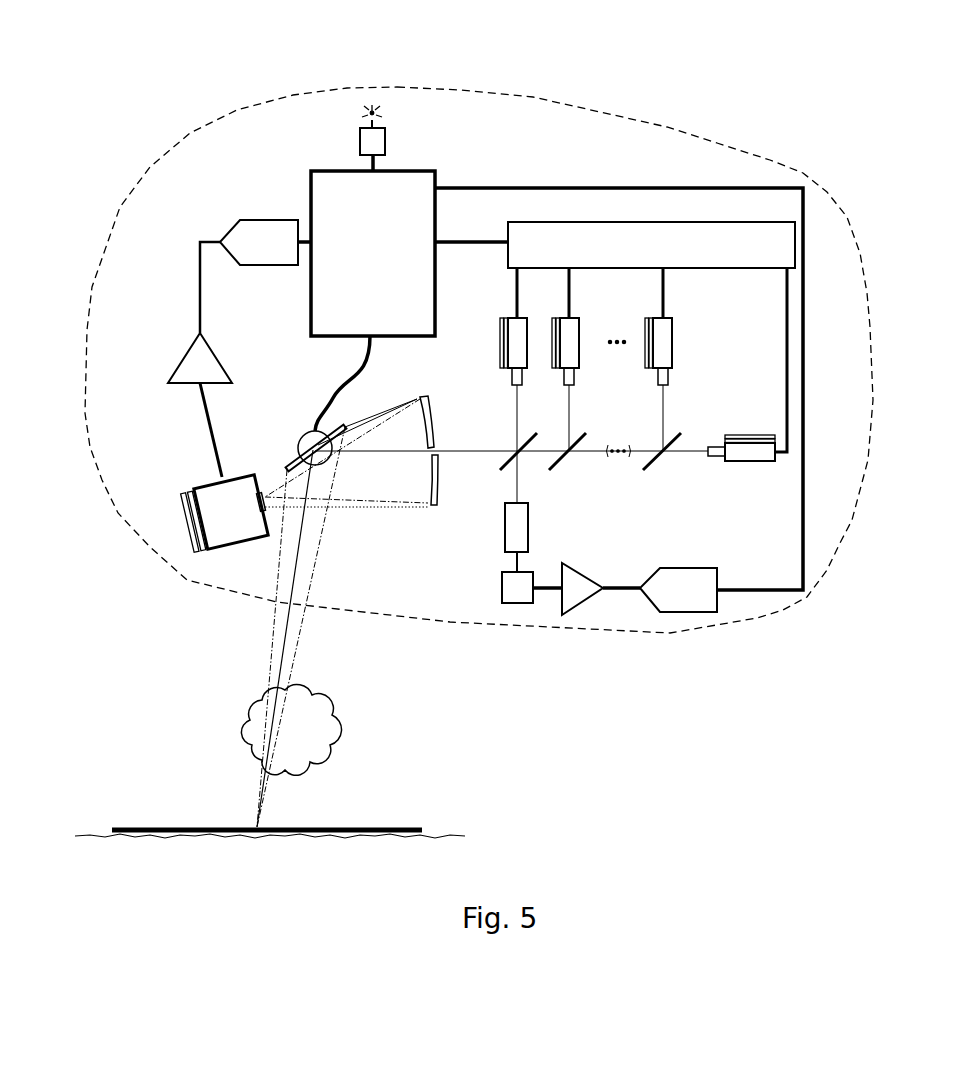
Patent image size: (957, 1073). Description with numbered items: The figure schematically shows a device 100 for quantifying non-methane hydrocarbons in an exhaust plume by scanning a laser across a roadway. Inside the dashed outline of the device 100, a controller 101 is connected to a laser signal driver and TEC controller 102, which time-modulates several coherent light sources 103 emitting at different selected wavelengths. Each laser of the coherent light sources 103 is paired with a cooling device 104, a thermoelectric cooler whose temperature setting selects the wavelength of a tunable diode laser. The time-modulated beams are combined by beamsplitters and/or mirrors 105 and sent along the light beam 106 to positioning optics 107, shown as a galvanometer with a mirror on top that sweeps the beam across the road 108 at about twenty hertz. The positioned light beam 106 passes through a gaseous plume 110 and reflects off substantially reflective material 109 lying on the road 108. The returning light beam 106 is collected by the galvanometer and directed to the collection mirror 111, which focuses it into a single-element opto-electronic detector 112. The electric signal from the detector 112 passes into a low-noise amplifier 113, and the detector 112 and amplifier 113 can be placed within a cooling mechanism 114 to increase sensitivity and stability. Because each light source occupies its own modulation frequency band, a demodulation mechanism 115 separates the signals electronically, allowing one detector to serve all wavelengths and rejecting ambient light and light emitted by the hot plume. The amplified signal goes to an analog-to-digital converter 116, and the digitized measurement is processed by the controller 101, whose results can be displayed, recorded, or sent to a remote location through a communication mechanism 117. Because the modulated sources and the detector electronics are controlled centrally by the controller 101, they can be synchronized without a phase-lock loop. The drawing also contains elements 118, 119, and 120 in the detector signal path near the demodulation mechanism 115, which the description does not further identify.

The device 100 is at (458, 88).
The controller 101 is at (435, 278).
The laser signal driver and TEC controller 102 is at (723, 220).
The coherent light sources 103 is at (527, 343).
The cooling device 104 is at (503, 342).
The beamsplitters and/or mirrors 105 is at (503, 472).
The light beam 106 is at (403, 453).
The positioning optics 107 is at (300, 442).
The road 108 is at (440, 835).
The substantially reflective material 109 is at (331, 828).
The gaseous plume 110 is at (320, 755).
The collection mirror 111 is at (432, 400).
The detector 112 is at (236, 545).
The low-noise amplifier 113 is at (218, 356).
The cooling mechanism 114 is at (186, 522).
The demodulation mechanism 115 is at (529, 530).
The analog-to-digital converter 116 is at (277, 218).
The communication mechanism 117 is at (388, 143).
The reference detector 118 is at (502, 592).
The amplifier 119 is at (562, 568).
The filter 120 is at (707, 568).